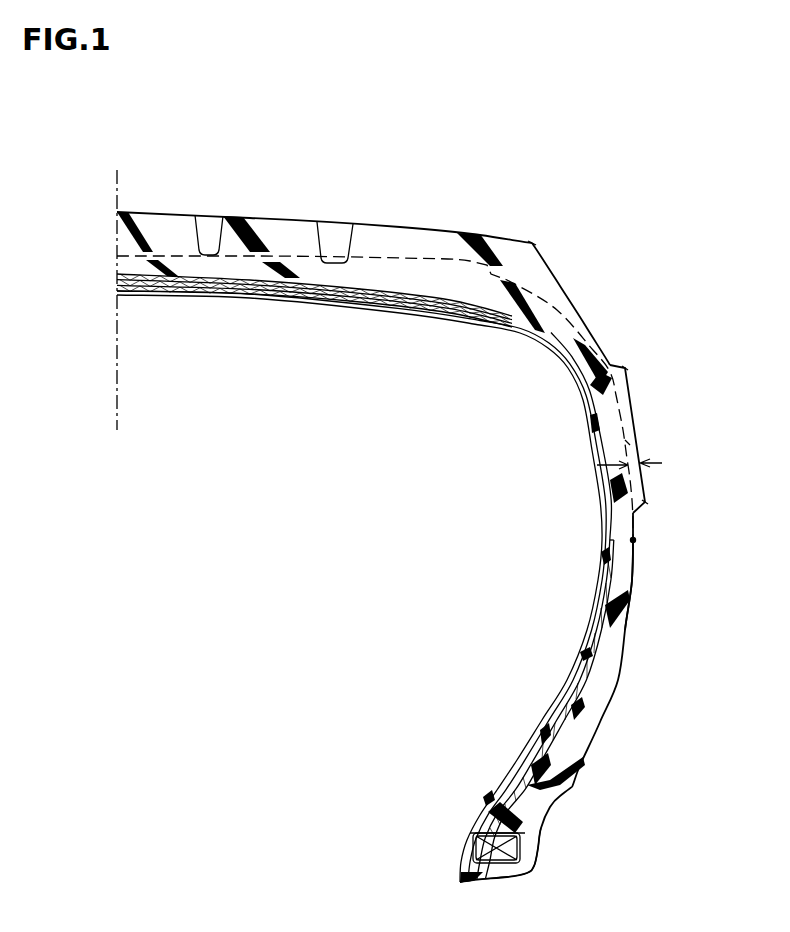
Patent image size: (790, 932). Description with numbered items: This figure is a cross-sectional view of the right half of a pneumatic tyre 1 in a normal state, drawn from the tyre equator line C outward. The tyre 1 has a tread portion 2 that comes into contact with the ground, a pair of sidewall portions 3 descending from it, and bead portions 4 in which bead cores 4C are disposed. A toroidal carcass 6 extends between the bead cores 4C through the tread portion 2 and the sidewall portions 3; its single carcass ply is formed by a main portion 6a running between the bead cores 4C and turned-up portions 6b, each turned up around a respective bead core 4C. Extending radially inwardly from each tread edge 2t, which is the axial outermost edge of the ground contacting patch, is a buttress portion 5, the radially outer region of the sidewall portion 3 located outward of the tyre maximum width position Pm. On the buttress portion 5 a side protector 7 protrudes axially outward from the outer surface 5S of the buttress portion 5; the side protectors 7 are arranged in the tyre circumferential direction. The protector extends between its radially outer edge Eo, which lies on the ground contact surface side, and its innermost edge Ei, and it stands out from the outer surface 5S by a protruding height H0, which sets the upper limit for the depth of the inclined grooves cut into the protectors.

The pneumatic tyre 1 is at (517, 183).
The tire equator (center line) C is at (118, 289).
The tread portion 2 is at (435, 228).
The tread edges 2t is at (532, 243).
The buttress portions 5 is at (660, 320).
The side protectors 7 is at (637, 402).
The outer edge of the side protector Eo is at (625, 368).
The innermost edge of the side protector Ei is at (645, 503).
The outer surface of the buttress portion 5S is at (627, 444).
The protruding height H0 is at (642, 464).
The tyre maximum width position Pm is at (636, 543).
The sidewall portions 3 is at (636, 585).
The carcass 6 is at (365, 586).
The main portion 6a is at (577, 680).
The turned-up portions 6b is at (600, 607).
The bead portions 4 is at (552, 848).
The bead cores 4C is at (493, 835).